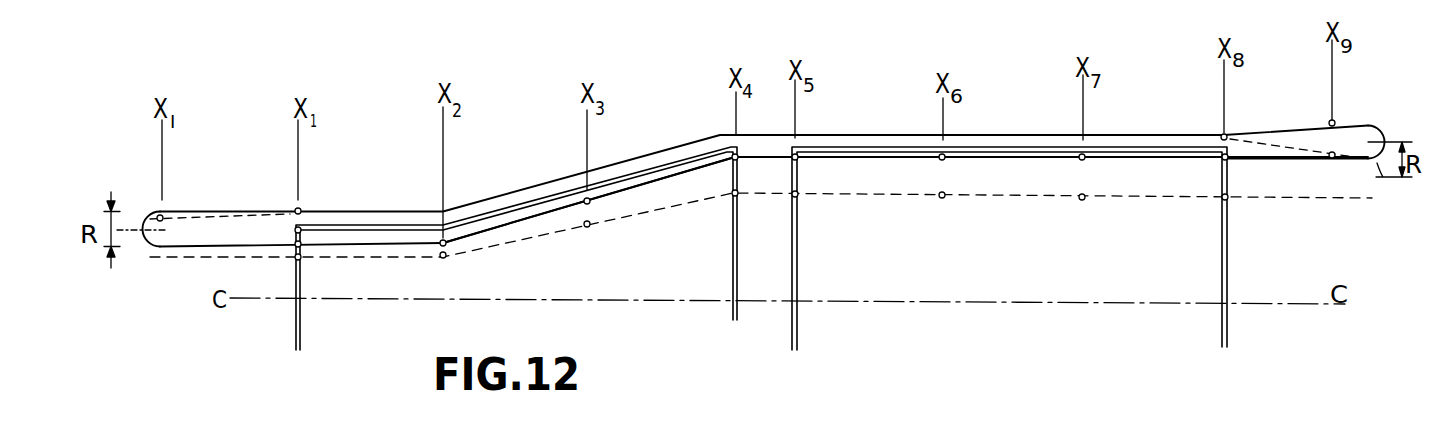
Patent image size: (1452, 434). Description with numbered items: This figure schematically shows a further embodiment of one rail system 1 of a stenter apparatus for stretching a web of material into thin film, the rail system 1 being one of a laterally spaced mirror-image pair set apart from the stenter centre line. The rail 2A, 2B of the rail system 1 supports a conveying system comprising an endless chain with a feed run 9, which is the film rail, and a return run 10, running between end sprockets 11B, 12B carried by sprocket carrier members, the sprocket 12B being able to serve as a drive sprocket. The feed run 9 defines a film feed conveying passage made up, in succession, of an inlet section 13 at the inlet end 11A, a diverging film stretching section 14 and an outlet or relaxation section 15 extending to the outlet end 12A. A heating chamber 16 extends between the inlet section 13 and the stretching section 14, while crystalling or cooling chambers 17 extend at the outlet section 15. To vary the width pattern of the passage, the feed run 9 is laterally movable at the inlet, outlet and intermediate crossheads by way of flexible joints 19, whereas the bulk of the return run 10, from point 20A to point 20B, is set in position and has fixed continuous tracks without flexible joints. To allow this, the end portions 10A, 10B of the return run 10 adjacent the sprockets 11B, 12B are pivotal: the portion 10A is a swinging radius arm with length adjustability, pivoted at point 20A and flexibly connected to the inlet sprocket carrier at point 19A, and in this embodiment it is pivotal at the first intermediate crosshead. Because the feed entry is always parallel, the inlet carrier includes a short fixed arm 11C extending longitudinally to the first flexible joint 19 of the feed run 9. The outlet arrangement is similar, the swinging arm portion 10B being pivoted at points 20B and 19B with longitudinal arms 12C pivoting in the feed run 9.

The rail system 1 is at (1010, 122).
The rail 2A is at (486, 199).
The rail 2B is at (589, 200).
The feed run 9 is at (672, 204).
The return run 10 is at (680, 145).
The end portion of return run 10A is at (198, 212).
The end portion of return run 10B is at (1302, 124).
The inlet end 11A is at (164, 268).
The end sprocket 11B is at (150, 208).
The fixed arm 11C is at (202, 250).
The outlet end 12A is at (1362, 178).
The end sprocket 12B is at (1372, 131).
The longitudinal arm 12C is at (1302, 161).
The inlet section 13 is at (282, 334).
The film stretching section 14 is at (608, 334).
The outlet section 15 is at (1022, 339).
The heating chamber 16 is at (533, 195).
The cooling chamber 17 is at (790, 228).
The flexible joint 19 is at (440, 240).
The connection point 19A is at (162, 215).
The pivot point 19B is at (1334, 121).
The pivot point 20A is at (298, 208).
The pivot point 20B is at (1222, 135).